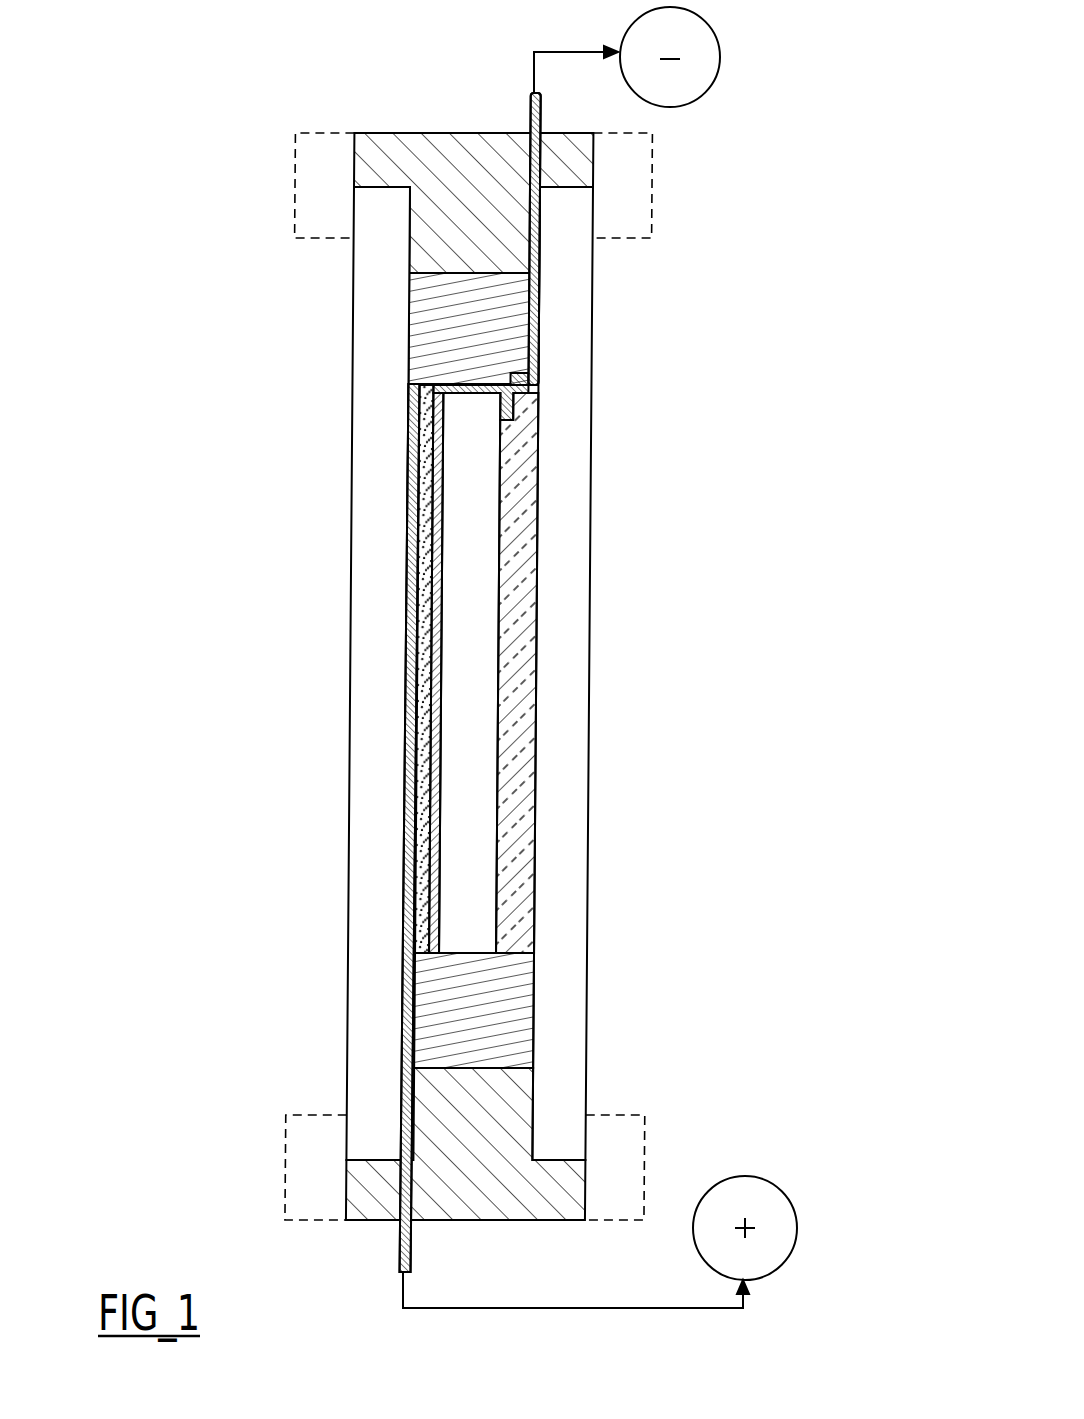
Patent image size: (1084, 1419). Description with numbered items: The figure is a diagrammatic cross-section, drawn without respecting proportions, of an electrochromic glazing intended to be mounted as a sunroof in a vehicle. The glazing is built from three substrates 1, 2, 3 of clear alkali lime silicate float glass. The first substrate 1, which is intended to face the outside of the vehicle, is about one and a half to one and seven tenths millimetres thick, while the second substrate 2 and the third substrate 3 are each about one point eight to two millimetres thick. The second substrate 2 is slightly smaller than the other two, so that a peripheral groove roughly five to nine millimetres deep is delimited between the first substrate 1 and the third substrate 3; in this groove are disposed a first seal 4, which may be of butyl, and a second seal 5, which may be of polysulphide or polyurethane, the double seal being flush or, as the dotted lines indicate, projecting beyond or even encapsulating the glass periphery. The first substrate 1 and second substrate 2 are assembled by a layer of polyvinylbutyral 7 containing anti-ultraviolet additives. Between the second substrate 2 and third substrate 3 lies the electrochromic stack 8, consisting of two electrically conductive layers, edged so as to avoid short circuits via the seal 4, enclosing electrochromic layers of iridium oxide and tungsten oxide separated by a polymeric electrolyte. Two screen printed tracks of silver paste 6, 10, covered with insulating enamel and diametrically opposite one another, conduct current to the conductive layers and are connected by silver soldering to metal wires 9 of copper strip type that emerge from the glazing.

The first substrate 1 is at (558, 763).
The second substrate 2 is at (480, 652).
The third substrate 3 is at (372, 703).
The first seal 4 is at (487, 1007).
The second seal 5 is at (498, 1122).
The screen printed track of silver paste 6 is at (408, 817).
The layer of polyvinylbutyral 7 is at (515, 682).
The electrochromic stack 8 is at (423, 578).
The metal wires 9 is at (528, 117).
The screen printed track of silver paste 10 is at (435, 610).